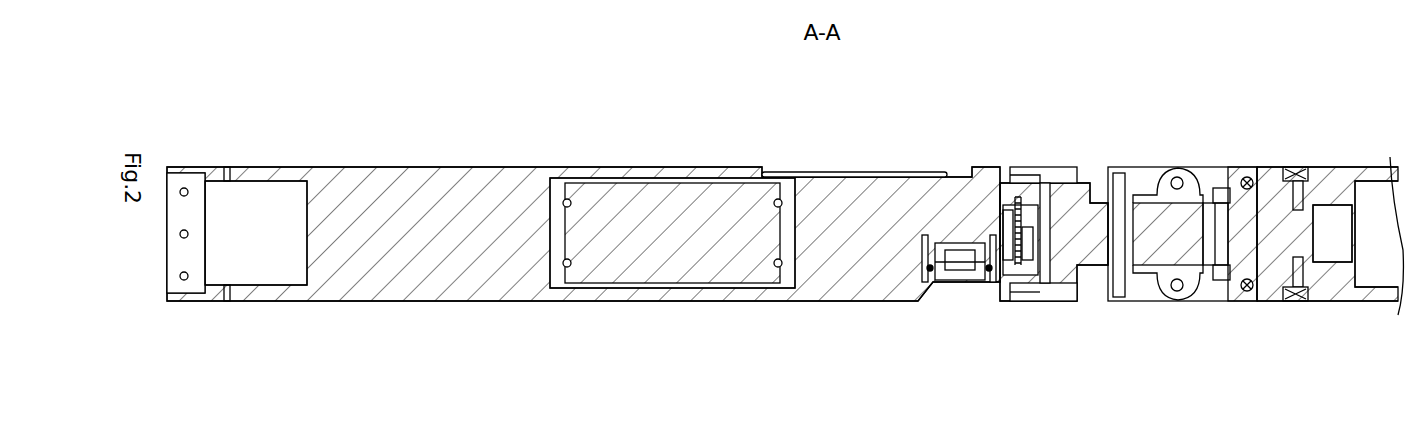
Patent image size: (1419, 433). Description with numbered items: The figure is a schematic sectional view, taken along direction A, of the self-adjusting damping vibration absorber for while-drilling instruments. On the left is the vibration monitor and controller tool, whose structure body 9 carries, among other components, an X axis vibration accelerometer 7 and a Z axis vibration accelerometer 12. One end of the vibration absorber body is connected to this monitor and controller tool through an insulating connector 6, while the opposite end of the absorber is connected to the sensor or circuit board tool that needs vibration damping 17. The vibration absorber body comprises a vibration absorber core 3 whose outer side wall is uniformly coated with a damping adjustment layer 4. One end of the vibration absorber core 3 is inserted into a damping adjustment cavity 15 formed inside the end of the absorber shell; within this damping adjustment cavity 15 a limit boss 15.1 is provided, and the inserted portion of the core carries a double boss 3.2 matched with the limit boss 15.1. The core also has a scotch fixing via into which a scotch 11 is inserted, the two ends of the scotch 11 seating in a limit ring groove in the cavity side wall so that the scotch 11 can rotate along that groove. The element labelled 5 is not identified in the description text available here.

The structure body 9 is at (411, 167).
The X axis vibration accelerometer 7 is at (951, 250).
The Z axis vibration accelerometer 12 is at (1008, 214).
The bracket 5 is at (1053, 176).
The insulating connector 6 is at (1047, 192).
The vibration absorber core 3 is at (1087, 216).
The scotch 11 is at (1119, 192).
The double boss 3.2 is at (1149, 194).
The damping adjustment cavity 15 is at (1221, 187).
The limit boss 15.1 is at (1182, 265).
The damping adjustment layer 4 is at (1299, 171).
The tool that needs vibration damping 17 is at (1334, 167).